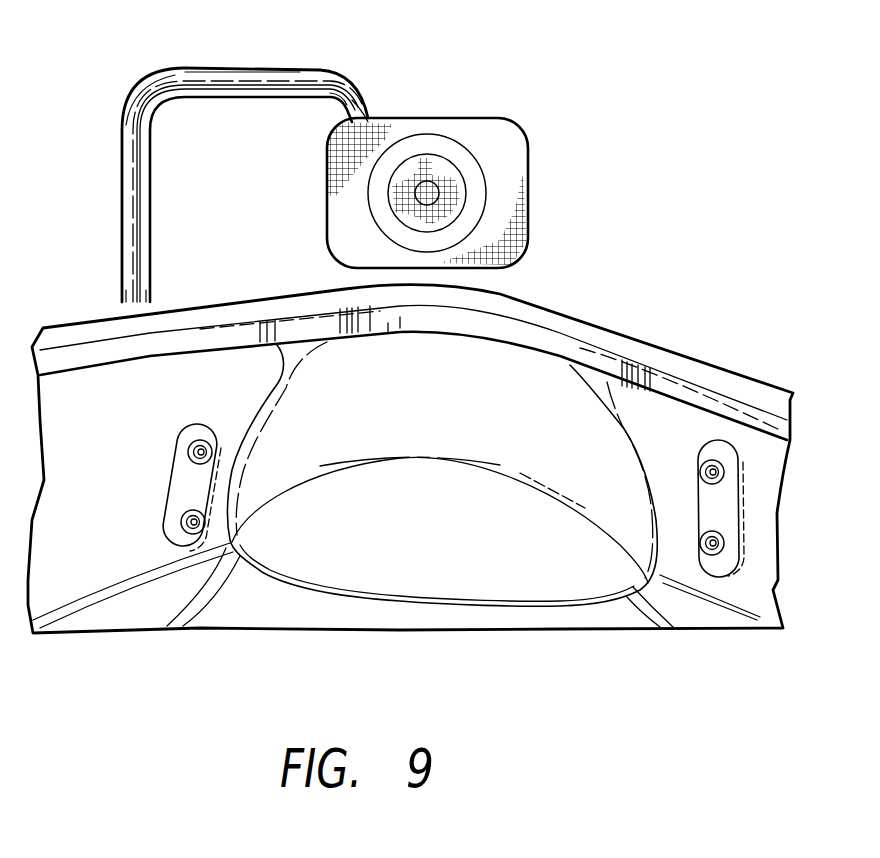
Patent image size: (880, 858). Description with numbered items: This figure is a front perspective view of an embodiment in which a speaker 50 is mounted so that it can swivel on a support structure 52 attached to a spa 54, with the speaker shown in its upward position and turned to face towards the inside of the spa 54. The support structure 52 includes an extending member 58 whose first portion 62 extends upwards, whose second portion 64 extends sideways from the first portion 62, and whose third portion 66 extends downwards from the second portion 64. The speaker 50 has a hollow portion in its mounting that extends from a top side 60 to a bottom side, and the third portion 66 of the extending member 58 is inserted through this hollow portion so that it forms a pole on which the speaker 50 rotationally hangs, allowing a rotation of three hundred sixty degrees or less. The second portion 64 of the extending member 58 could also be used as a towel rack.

The speaker 50 is at (445, 177).
The support structure 52 is at (135, 200).
The spa 54 is at (670, 463).
The extending member 58 is at (125, 297).
The top side 60 is at (350, 126).
The first portion 62 is at (150, 107).
The second portion 64 is at (190, 82).
The third portion 66 is at (337, 117).